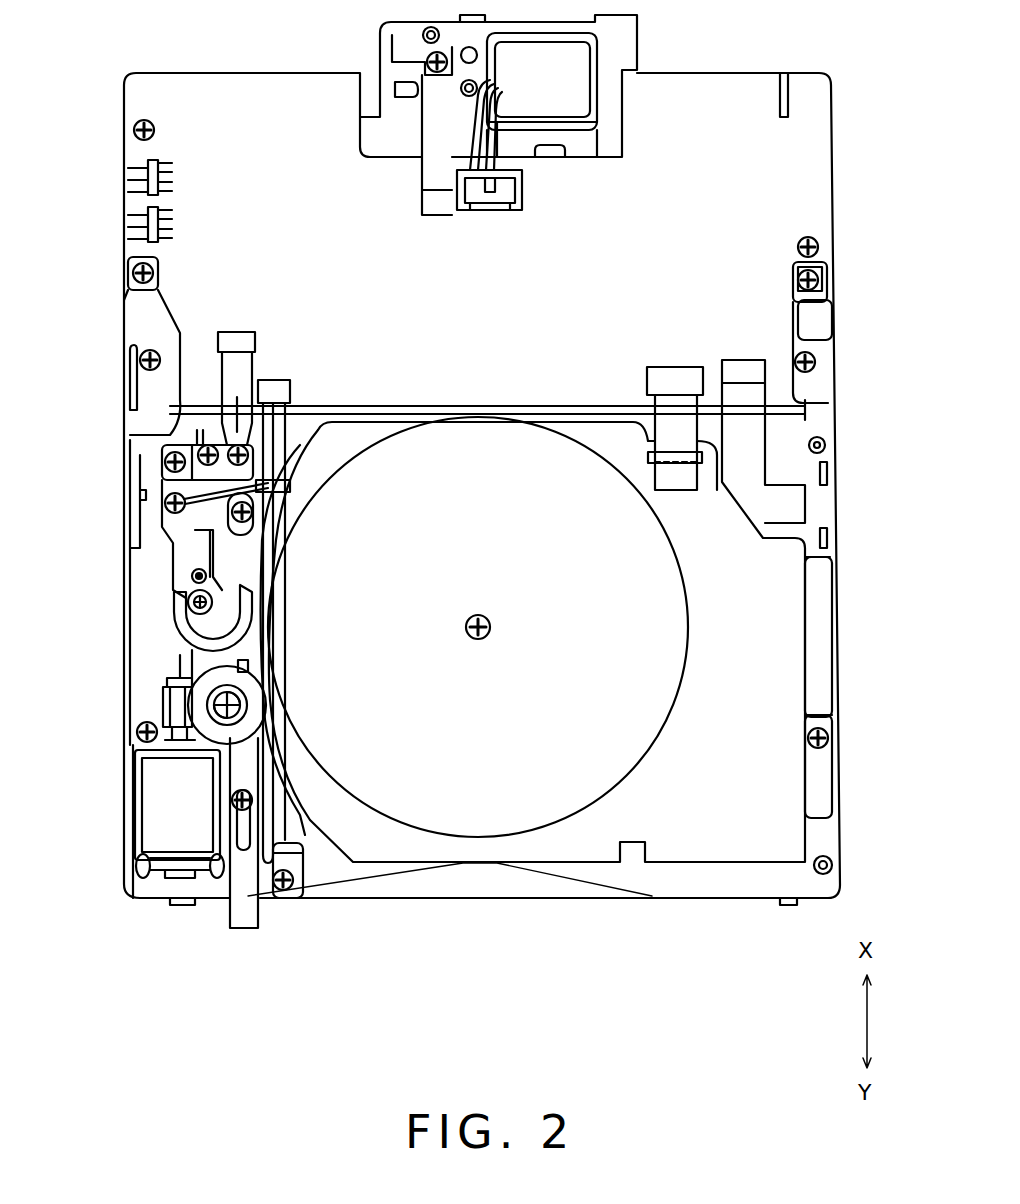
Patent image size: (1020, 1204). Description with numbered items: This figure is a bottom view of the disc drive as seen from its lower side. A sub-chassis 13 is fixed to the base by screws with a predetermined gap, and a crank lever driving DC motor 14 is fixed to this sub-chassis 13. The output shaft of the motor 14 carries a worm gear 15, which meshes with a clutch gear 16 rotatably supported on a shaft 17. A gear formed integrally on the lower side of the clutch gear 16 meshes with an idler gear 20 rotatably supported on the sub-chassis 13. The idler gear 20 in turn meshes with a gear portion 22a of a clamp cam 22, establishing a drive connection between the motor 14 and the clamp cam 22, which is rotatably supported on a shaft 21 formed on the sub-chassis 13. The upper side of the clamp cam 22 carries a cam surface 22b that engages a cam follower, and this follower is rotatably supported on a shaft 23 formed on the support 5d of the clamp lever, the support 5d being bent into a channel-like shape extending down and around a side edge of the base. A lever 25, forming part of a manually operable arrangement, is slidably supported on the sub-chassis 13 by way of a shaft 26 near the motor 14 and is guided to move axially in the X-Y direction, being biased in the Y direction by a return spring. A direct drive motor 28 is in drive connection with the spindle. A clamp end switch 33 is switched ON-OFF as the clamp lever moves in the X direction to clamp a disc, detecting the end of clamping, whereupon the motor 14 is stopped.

The support 5d is at (228, 550).
The sub-chassis 13 is at (293, 868).
The crank lever driving DC motor 14 is at (158, 803).
The worm gear 15 is at (172, 720).
The clutch gear 16 is at (163, 706).
The shaft 17 is at (232, 707).
The idler gear 20 is at (170, 683).
The shaft 21 is at (190, 600).
The clamp cam 22 is at (182, 645).
The gear portion 22a is at (262, 642).
The cam surface 22b is at (252, 571).
The shaft 23 is at (192, 572).
The lever 25 is at (247, 908).
The shaft 26 is at (253, 803).
The direct drive motor 28 is at (675, 650).
The clamp end switch 33 is at (178, 442).